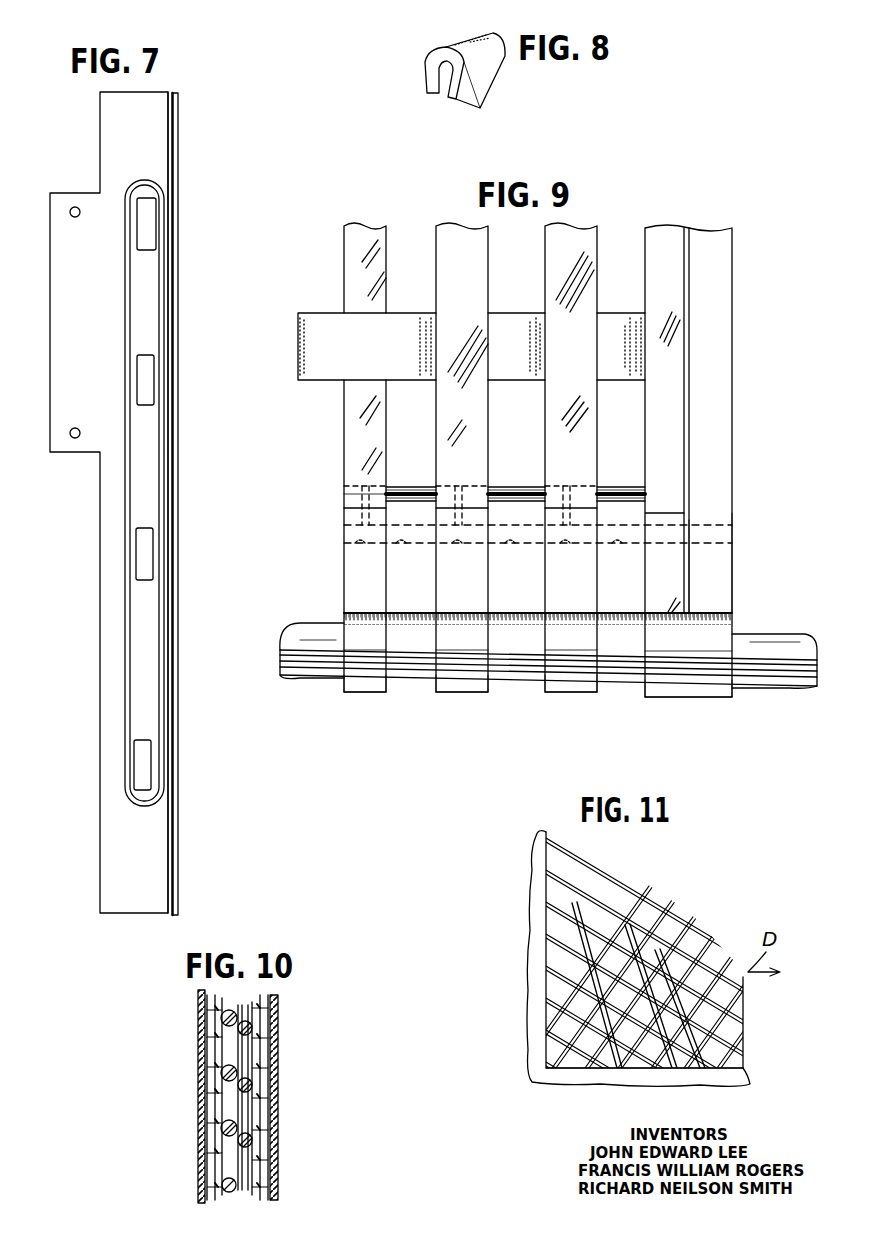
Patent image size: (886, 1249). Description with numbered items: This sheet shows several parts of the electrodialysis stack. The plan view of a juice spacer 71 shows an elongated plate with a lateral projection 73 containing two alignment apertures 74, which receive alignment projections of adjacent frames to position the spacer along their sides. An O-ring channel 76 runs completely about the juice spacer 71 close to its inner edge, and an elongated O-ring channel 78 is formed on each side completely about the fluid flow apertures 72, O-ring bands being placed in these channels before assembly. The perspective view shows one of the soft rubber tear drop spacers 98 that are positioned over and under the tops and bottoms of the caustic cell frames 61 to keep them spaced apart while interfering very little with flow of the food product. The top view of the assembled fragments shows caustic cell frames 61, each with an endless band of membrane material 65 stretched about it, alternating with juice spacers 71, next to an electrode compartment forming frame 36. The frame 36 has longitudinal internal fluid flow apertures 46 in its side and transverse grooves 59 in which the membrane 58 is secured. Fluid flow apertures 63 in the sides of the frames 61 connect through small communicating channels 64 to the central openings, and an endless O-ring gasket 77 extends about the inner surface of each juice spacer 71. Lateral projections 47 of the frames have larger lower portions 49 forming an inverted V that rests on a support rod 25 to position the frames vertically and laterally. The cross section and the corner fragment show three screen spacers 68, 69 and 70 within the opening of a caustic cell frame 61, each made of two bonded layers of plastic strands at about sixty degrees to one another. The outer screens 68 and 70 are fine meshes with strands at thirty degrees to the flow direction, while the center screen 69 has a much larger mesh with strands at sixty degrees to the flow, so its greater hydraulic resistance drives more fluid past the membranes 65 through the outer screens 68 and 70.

In FIG. 9, the support rod 25 is at (798, 688).
In FIG. 9, the electrode compartment forming frame 36 is at (728, 598).
In FIG. 9, the longitudinal internal fluid flow aperture 46 is at (707, 530).
In FIG. 9, the lateral projection 47 is at (462, 642).
In FIG. 9, the larger lower portion 49 is at (490, 694).
In FIG. 9, the membrane 58 is at (676, 440).
In FIG. 9, the transverse groove 59 is at (690, 580).
In FIG. 9, the caustic cell frame 61 is at (344, 594).
In FIG. 11, the caustic cell frame 61 is at (530, 956).
In FIG. 9, the fluid flow aperture 63 is at (360, 544).
In FIG. 9, the communicating channel 64 is at (344, 492).
In FIG. 9, the membrane material 65 is at (344, 274).
In FIG. 10, the membrane material 65 is at (198, 1080).
In FIG. 10, the screen spacer 68 is at (207, 1122).
In FIG. 11, the screen spacer 68 is at (686, 892).
In FIG. 10, the center screen spacer 69 is at (252, 1140).
In FIG. 11, the center screen spacer 69 is at (548, 942).
In FIG. 10, the screen spacer 70 is at (270, 1172).
In FIG. 11, the screen spacer 70 is at (580, 1058).
In FIG. 7, the juice spacer 71 is at (100, 639).
In FIG. 9, the juice spacer 71 is at (407, 486).
In FIG. 7, the fluid flow aperture 72 is at (148, 234).
In FIG. 9, the fluid flow aperture 72 is at (404, 545).
In FIG. 7, the lateral projection 73 is at (50, 313).
In FIG. 9, the lateral projection 73 is at (410, 640).
In FIG. 7, the alignment aperture 74 is at (78, 217).
In FIG. 7, the O-ring channel 76 is at (175, 93).
In FIG. 9, the O-ring channel 76 is at (424, 499).
In FIG. 9, the endless O-ring gasket 77 is at (398, 498).
In FIG. 7, the elongated O-ring channel 78 is at (133, 694).
In FIG. 8, the tear drop spacer 98 is at (443, 47).
In FIG. 9, the tear drop spacer 98 is at (298, 318).